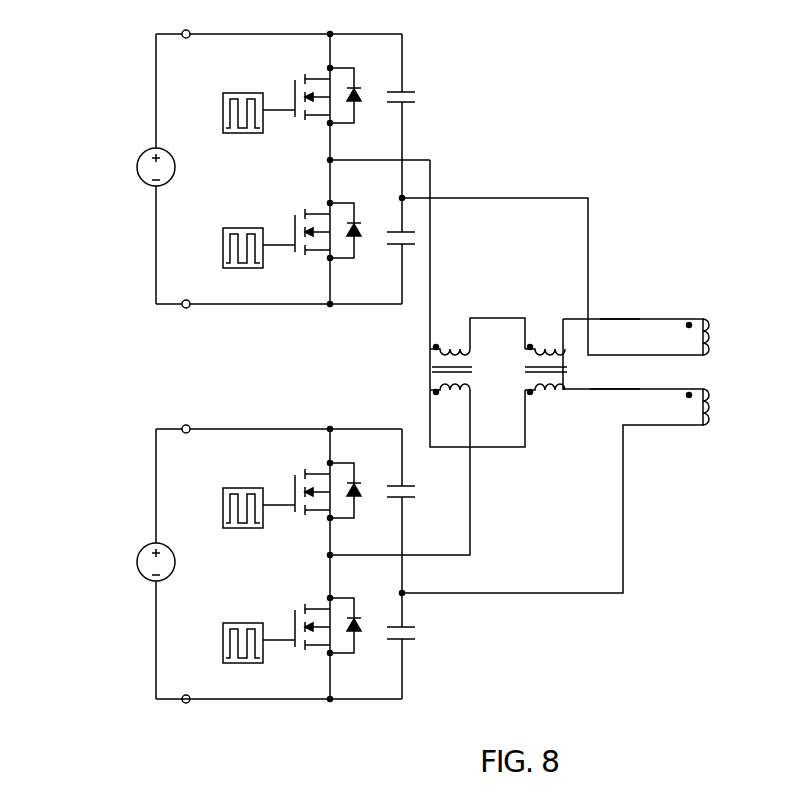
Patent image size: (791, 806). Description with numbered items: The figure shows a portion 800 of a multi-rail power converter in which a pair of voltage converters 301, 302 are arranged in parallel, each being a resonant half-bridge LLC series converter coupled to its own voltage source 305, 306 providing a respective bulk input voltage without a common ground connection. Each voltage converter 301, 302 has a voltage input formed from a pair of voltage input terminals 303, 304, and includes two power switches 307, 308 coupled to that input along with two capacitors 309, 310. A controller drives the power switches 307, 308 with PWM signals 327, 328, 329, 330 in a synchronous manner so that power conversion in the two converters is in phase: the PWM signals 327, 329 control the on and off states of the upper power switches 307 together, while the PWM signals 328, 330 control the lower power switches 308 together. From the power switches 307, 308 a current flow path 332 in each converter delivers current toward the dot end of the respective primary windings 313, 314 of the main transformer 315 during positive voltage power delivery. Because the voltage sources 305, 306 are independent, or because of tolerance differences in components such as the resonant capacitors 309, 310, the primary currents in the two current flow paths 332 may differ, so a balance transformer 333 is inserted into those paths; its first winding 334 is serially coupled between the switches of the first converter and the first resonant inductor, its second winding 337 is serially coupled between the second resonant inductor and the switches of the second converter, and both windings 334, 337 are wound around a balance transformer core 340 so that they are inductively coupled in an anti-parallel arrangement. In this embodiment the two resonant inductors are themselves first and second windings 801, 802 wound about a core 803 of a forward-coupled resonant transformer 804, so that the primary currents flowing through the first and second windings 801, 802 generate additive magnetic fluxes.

The voltage converter 301 is at (99, 157).
The voltage converter 302 is at (99, 567).
The voltage input terminal 303 is at (186, 424).
The voltage input terminal 304 is at (186, 308).
The voltage source 305 is at (159, 150).
The voltage source 306 is at (159, 545).
The power switch 307 is at (317, 73).
The power switch 308 is at (317, 209).
The capacitor 309 is at (405, 90).
The capacitor 310 is at (397, 247).
The primary winding 313 is at (705, 324).
The primary winding 314 is at (720, 437).
The transformer 315 is at (566, 395).
The PWM signal 327 is at (243, 92).
The PWM signal 328 is at (243, 227).
The PWM signal 329 is at (243, 487).
The PWM signal 330 is at (243, 622).
The current flow path 332 is at (615, 318).
The balance transformer 333 is at (466, 303).
The first winding 334 is at (433, 350).
The second winding 337 is at (434, 380).
The balance transformer core 340 is at (432, 367).
The portion 800 is at (499, 128).
The first winding 801 is at (524, 366).
The second winding 802 is at (527, 380).
The core 803 is at (564, 366).
The forward-coupled resonant transformer 804 is at (547, 318).